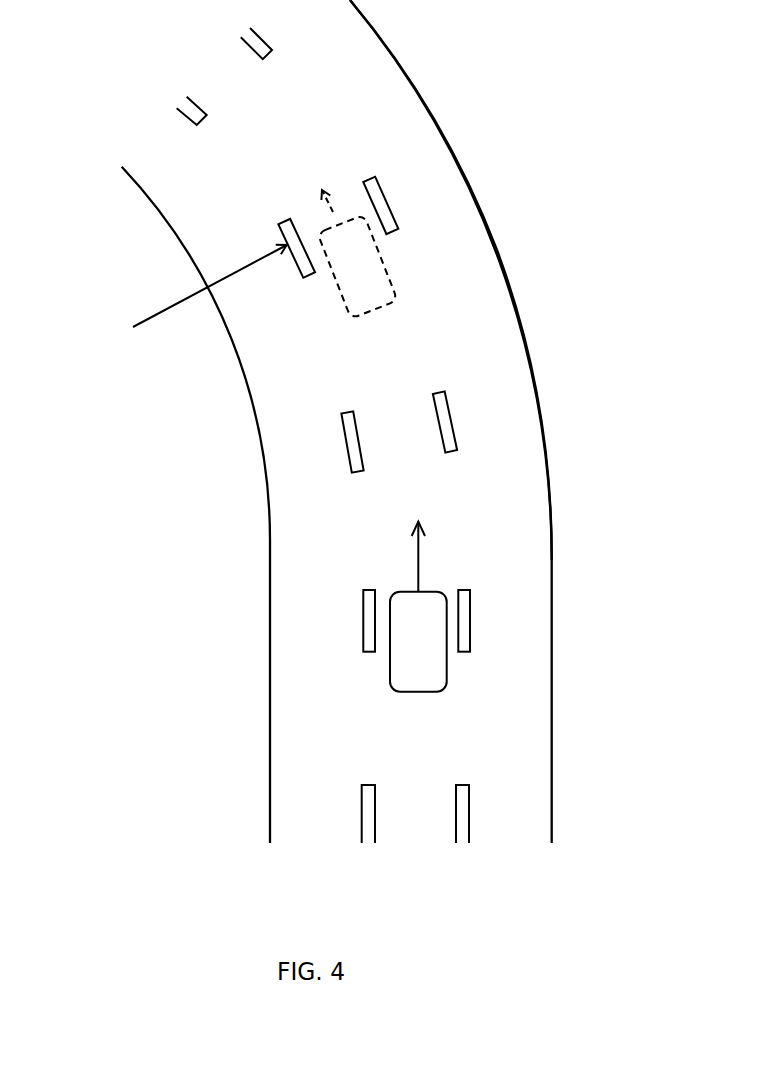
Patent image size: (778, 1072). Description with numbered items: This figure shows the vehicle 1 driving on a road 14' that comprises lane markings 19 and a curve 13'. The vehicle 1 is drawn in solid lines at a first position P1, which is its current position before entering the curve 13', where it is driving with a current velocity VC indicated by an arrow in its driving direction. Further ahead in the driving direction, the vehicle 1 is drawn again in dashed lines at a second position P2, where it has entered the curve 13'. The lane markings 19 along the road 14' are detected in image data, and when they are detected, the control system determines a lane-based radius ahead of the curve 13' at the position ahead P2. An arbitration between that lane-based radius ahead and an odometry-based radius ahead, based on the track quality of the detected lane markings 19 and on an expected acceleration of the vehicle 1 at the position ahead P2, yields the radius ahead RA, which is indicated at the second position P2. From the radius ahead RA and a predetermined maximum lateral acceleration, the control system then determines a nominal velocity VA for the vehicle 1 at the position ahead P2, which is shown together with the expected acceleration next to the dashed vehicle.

The vehicle 1 is at (445, 677).
The first position P1 is at (445, 622).
The current velocity VC is at (420, 550).
The lane markings 19 is at (348, 457).
The second position P2 is at (380, 252).
The nominal velocity VA is at (375, 180).
The radius ahead RA is at (184, 297).
The curve 13' is at (471, 125).
The road 14' is at (572, 405).